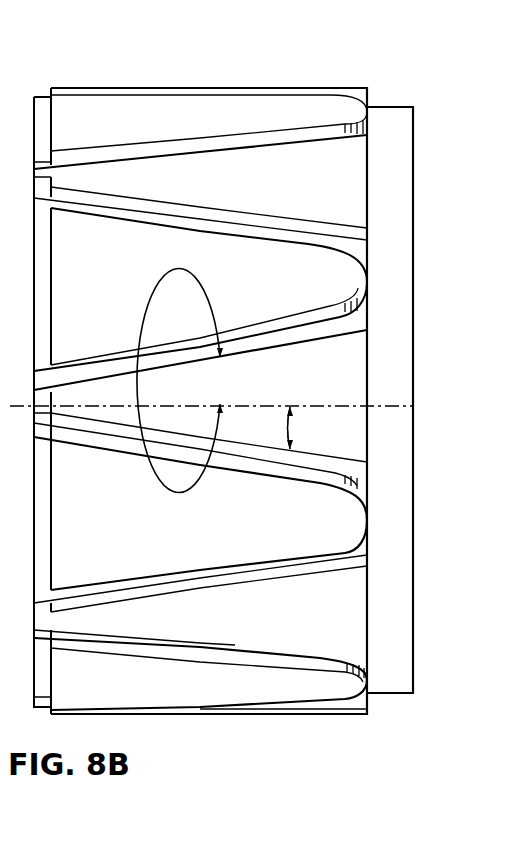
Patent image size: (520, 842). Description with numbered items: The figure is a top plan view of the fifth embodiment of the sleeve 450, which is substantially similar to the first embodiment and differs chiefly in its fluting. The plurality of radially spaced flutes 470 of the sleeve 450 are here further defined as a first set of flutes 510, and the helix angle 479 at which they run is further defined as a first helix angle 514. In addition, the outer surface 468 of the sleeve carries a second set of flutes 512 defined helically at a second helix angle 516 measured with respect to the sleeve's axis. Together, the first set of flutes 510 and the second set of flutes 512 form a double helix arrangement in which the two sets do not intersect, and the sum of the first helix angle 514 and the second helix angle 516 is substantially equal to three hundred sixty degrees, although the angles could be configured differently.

The sleeve 450 is at (131, 86).
The outer surface 468 is at (87, 117).
The plurality of radially spaced flutes 470 is at (259, 134).
The second set of flutes 512 is at (321, 138).
The first set of flutes 510 is at (336, 232).
The second helix angle 516 is at (208, 306).
The helix angle 479 is at (295, 432).
The first helix angle 514 is at (289, 428).